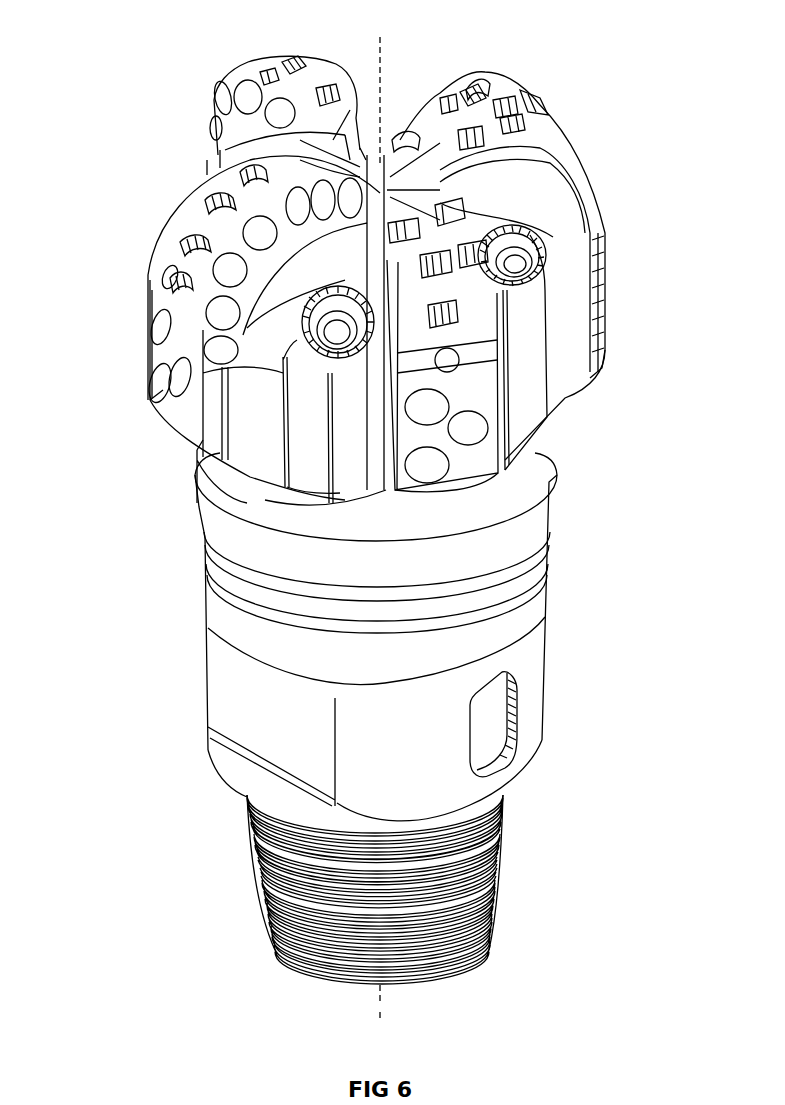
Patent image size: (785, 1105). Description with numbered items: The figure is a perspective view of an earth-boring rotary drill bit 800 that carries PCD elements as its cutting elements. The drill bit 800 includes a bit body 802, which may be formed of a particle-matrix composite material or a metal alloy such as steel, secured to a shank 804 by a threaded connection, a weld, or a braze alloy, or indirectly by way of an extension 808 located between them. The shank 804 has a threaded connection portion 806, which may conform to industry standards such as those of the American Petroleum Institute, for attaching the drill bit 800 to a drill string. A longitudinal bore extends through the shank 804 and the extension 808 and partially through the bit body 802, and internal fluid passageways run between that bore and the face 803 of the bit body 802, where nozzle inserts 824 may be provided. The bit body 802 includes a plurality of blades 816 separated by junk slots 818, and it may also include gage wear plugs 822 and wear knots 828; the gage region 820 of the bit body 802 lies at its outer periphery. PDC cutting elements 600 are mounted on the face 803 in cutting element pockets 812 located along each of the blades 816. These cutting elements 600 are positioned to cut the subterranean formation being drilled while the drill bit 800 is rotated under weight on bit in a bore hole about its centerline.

The earth-boring rotary drill bit 800 is at (612, 30).
The bit body 802 is at (612, 217).
The face 803 is at (546, 266).
The shank 804 is at (540, 680).
The threaded connection portion 806 is at (493, 882).
The extension 808 is at (545, 543).
The cutting element pockets 812 is at (198, 143).
The blades 816 is at (313, 57).
The junk slots 818 is at (520, 207).
The gauge pad 820 is at (607, 343).
The gage wear plugs 822 is at (148, 358).
The nozzle inserts 824 is at (200, 368).
The wear knots 828 is at (160, 284).
The cutting elements 600 is at (205, 95).